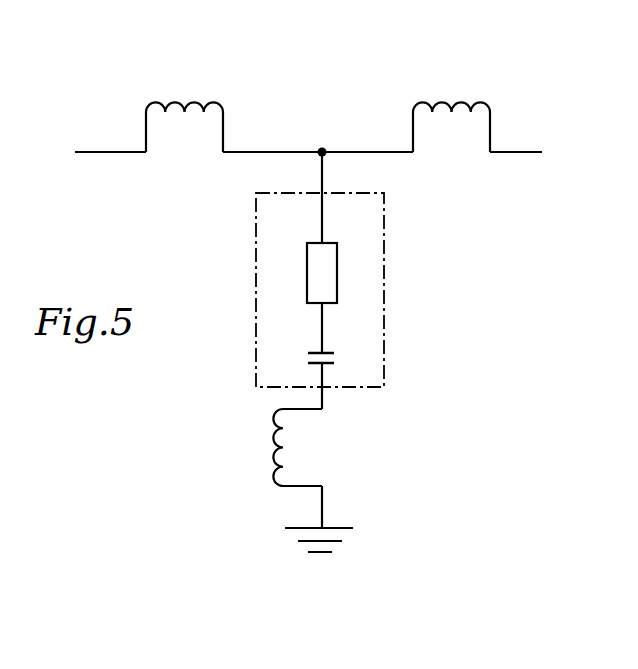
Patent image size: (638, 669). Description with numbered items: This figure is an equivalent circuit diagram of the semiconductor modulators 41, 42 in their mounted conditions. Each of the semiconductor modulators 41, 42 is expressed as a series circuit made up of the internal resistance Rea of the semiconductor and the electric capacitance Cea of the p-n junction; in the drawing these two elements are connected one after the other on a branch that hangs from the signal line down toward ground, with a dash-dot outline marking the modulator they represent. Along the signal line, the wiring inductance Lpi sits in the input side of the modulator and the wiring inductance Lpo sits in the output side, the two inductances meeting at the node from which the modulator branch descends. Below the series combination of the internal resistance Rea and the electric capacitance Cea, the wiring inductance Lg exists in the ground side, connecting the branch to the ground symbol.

The wiring inductance of the input side Lpi is at (195, 103).
The wiring inductance of the output side Lpo is at (442, 103).
The semiconductor modulator 41 is at (257, 290).
The semiconductor modulator 42 is at (255, 270).
The internal resistance Rea is at (330, 278).
The electric capacitance Cea is at (334, 352).
The wiring inductance of the ground side Lg is at (272, 458).